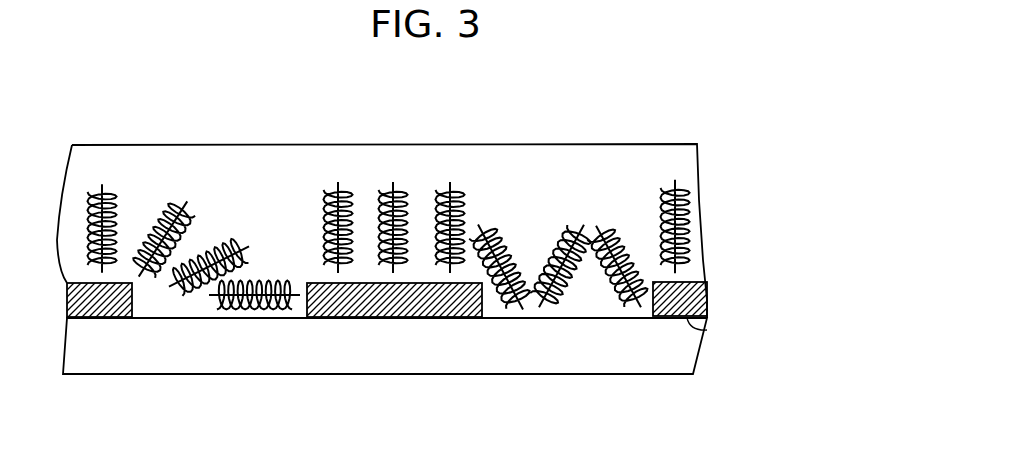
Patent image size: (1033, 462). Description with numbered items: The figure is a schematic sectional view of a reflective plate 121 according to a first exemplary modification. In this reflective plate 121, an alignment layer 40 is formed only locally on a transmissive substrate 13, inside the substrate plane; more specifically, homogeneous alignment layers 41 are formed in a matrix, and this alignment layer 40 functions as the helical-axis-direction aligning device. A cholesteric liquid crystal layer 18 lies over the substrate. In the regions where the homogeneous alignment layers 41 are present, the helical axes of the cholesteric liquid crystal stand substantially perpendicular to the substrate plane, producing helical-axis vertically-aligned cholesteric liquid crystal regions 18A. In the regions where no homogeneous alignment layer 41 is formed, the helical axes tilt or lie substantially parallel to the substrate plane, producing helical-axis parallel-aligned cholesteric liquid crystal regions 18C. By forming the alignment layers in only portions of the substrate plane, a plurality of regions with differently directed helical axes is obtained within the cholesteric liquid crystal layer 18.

The reflective plate 121 is at (712, 112).
The cholesteric liquid crystal layer 18 is at (665, 163).
The helical-axis vertically-aligned cholesteric liquid crystal region 18A is at (477, 137).
The helical-axis parallel-aligned cholesteric liquid crystal region 18C is at (302, 137).
The alignment layer 40 is at (722, 297).
The homogeneous alignment layer 41 is at (90, 319).
The transmissive substrate 13 is at (680, 352).